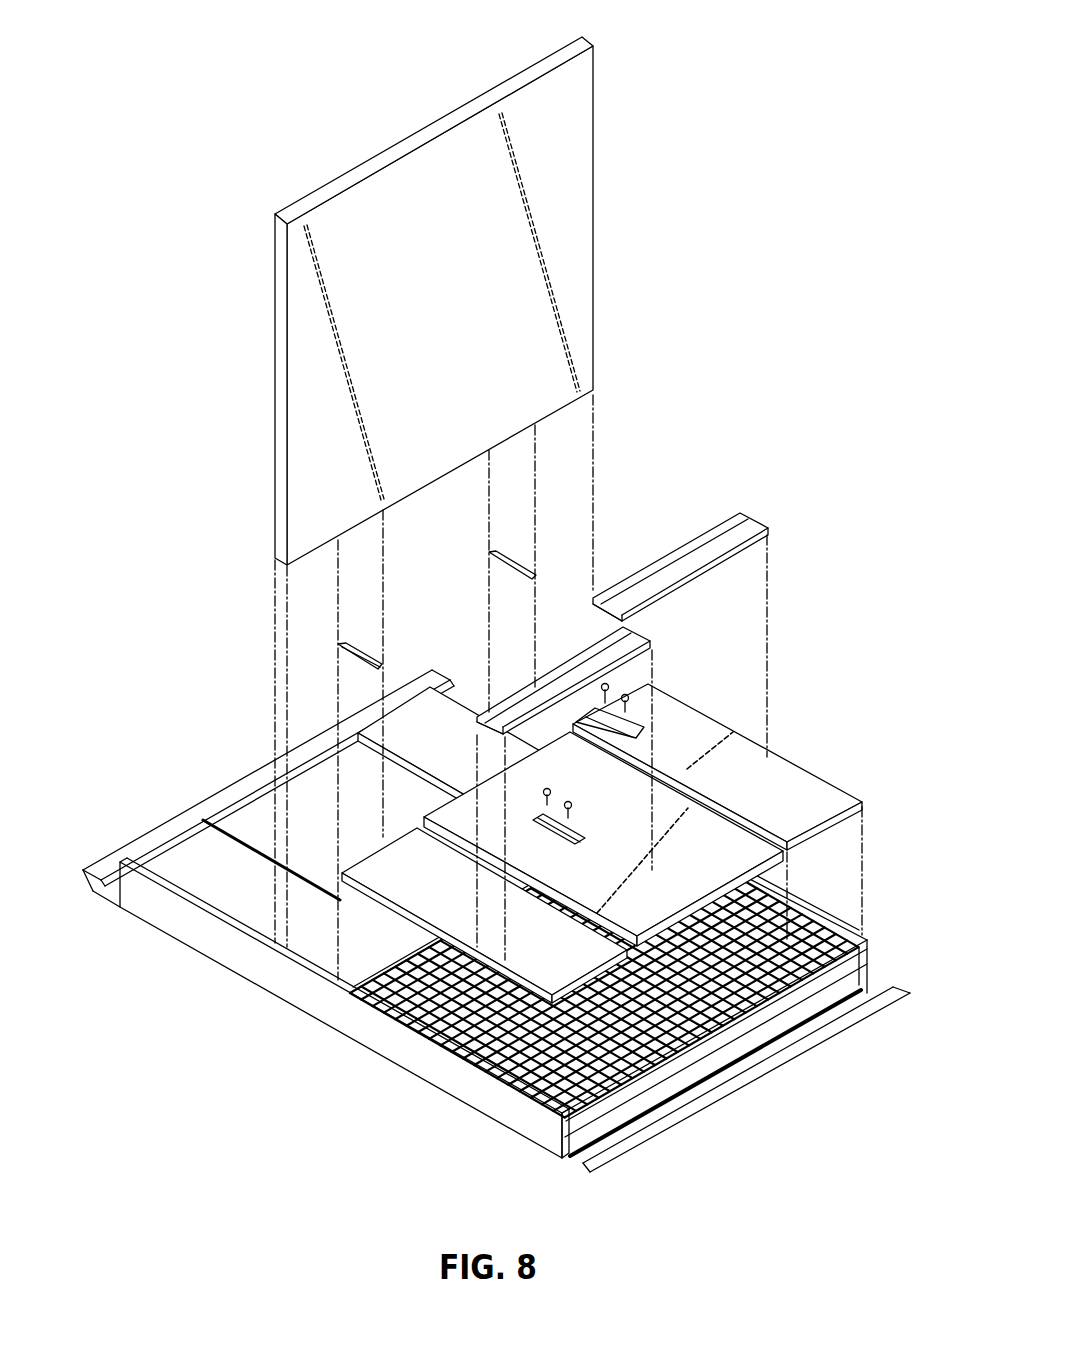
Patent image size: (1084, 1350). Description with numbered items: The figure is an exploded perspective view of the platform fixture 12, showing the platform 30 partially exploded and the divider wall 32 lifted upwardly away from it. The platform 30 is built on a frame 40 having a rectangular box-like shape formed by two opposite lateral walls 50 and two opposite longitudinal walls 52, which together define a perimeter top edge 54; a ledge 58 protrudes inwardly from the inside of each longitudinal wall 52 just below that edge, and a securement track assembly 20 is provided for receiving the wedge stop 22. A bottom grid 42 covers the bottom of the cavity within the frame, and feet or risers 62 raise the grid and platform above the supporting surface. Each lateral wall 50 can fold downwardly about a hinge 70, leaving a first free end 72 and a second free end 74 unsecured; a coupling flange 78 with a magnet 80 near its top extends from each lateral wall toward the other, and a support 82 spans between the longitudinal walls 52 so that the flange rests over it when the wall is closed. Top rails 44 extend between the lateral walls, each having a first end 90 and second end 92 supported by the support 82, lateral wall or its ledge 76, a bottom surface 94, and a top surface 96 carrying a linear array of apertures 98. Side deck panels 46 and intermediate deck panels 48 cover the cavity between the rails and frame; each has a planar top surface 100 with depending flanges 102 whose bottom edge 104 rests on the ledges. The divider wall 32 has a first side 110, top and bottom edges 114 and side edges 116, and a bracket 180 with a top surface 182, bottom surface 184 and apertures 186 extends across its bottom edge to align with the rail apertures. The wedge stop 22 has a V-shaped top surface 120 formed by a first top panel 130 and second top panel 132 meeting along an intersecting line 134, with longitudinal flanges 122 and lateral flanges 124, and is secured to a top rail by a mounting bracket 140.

The platform fixture 12 is at (207, 119).
The securement track assembly 20 is at (770, 1050).
The wedge stop 22 is at (732, 516).
The platform 30 is at (227, 947).
The divider wall 32 is at (565, 210).
The frame 40 is at (867, 965).
The bottom grid 42 is at (692, 1113).
The top rails 44 is at (805, 905).
The side deck panels 46 is at (440, 700).
The intermediate deck panels 48 is at (720, 840).
The lateral walls 50 is at (733, 1087).
The longitudinal walls 52 is at (482, 1097).
The perimeter top edge 54 is at (853, 927).
The ledge 58 is at (817, 920).
The feet or risers 62 is at (535, 1152).
The hinge 70 is at (573, 1170).
The first free end 72 is at (897, 983).
The second free end 74 is at (100, 887).
The ledge 76 is at (853, 1013).
The coupling flange 78 is at (100, 880).
The magnet 80 is at (667, 1127).
The support 82 is at (643, 1140).
The first end 90 is at (827, 1007).
The second end 92 is at (370, 710).
The bottom surface 94 is at (745, 1080).
The top surface 96 is at (857, 962).
The apertures 98 is at (445, 1015).
The top surface 100 is at (692, 724).
The depending flanges 102 is at (862, 812).
The bottom edge 104 is at (792, 845).
The first side 110 is at (568, 275).
The top and bottom edges 114 is at (534, 73).
The side edges 116 is at (285, 320).
The wedge shape top surface 120 is at (745, 540).
The longitudinal flanges 122 is at (700, 575).
The lateral flanges 124 is at (593, 607).
The first top panel 130 is at (688, 553).
The second top panel 132 is at (760, 525).
The intersecting line 134 is at (640, 597).
The mounting bracket 140 is at (640, 735).
The bracket 180 is at (358, 658).
The top surface 182 is at (360, 648).
The bottom surface 184 is at (370, 664).
The aperture 186 is at (340, 632).